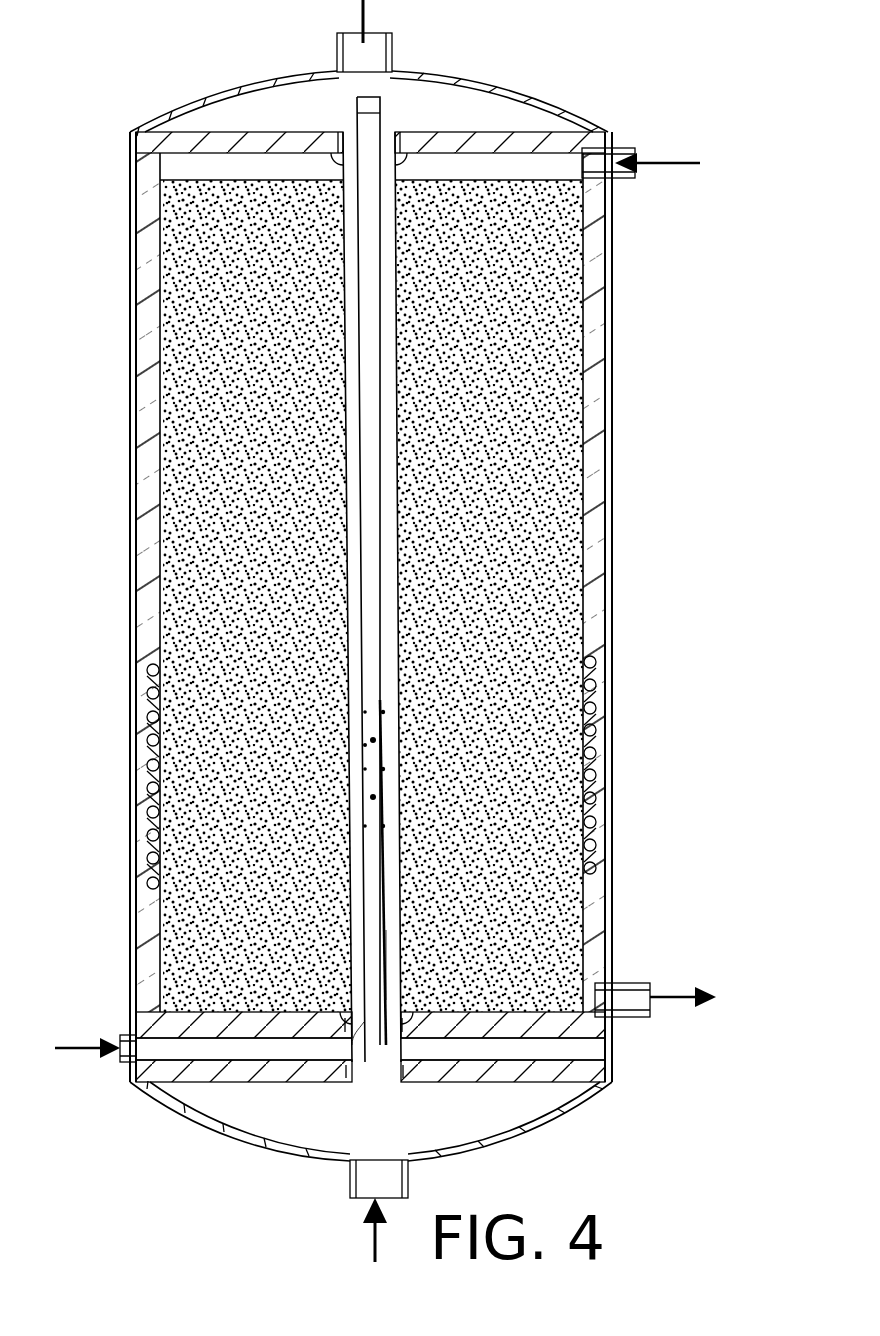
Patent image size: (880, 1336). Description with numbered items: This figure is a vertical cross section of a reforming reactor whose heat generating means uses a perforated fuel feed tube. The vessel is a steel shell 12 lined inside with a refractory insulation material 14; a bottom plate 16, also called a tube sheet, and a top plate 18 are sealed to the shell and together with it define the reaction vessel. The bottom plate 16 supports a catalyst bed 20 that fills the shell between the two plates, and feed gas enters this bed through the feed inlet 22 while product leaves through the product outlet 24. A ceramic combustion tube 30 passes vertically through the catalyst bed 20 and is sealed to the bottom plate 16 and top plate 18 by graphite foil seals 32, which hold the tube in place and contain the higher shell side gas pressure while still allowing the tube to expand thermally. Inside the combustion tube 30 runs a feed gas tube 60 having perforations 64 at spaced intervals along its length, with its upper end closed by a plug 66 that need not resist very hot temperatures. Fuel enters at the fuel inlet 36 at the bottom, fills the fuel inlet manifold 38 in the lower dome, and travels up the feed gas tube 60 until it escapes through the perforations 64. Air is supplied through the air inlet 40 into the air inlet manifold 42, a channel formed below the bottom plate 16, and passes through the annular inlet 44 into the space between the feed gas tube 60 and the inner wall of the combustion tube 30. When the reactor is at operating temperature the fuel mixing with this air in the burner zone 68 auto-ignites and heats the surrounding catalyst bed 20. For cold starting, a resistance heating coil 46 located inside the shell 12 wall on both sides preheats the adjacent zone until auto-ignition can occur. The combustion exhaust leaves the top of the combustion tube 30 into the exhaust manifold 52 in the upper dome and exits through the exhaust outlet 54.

The steel shell 12 is at (134, 272).
The refractory insulation material 14 is at (152, 333).
The bottom plate 16 is at (162, 1025).
The top plate 18 is at (220, 145).
The catalyst bed 20 is at (500, 330).
The feed inlet 22 is at (618, 148).
The product outlet 24 is at (650, 985).
The combustion tube 30 is at (402, 430).
The seals 32 is at (336, 158).
The fuel inlet 36 is at (410, 1185).
The fuel inlet manifold 38 is at (557, 1098).
The air inlet 40 is at (115, 1068).
The air inlet manifold 42 is at (212, 1046).
The annular inlet 44 is at (355, 1050).
The resistance heating coil 46 is at (148, 670).
The exhaust manifold 52 is at (490, 100).
The exhaust outlet 54 is at (392, 50).
The feed gas tube 60 is at (390, 955).
The perforations 64 is at (385, 826).
The plug 66 is at (372, 108).
The burner zone 68 is at (363, 746).